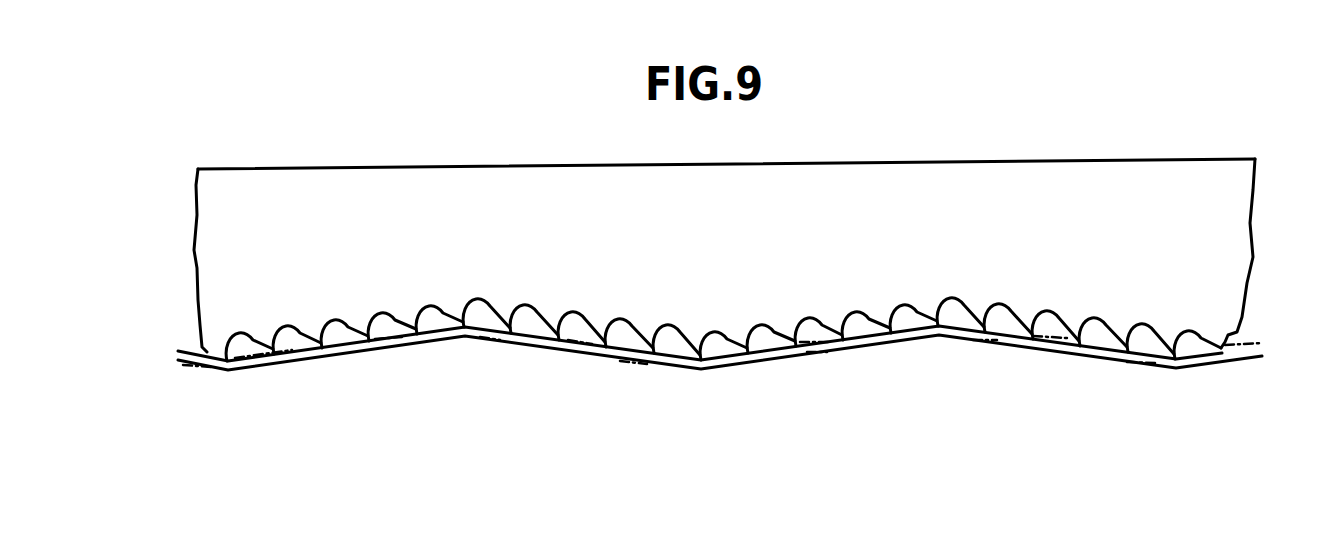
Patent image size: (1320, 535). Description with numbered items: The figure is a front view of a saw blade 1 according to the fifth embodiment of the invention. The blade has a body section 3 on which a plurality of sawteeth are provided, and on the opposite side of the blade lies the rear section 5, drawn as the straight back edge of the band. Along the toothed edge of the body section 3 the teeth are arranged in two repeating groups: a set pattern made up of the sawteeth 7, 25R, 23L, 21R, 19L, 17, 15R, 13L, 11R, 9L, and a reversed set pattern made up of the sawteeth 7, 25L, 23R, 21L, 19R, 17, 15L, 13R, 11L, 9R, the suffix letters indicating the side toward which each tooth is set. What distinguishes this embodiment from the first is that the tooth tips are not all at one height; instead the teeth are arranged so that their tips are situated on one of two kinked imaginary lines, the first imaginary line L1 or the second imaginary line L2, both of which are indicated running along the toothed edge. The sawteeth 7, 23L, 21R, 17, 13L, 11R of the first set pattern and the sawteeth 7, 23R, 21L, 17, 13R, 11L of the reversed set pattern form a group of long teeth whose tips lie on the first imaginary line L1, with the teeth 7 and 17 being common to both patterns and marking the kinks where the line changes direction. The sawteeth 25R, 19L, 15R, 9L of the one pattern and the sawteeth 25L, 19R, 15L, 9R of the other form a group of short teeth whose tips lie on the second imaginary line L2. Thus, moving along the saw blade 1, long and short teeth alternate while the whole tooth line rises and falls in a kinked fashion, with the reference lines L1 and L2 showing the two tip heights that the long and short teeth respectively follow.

The saw blade 1 is at (893, 190).
The body section 3 is at (698, 240).
The rear section 5 is at (1045, 160).
The sawtooth 7 is at (227, 364).
The sawtooth 9L is at (274, 357).
The sawtooth 9R is at (748, 356).
The sawtooth 11L is at (796, 349).
The sawtooth 11R is at (322, 351).
The sawtooth 13L is at (369, 344).
The sawtooth 13R is at (843, 343).
The sawtooth 15L is at (891, 336).
The sawtooth 15R is at (417, 337).
The sawtooth 17 is at (464, 330).
The sawtooth 19L is at (511, 336).
The sawtooth 19R is at (985, 335).
The sawtooth 21L is at (1033, 342).
The sawtooth 21R is at (559, 343).
The sawtooth 23L is at (606, 350).
The sawtooth 23R is at (1080, 349).
The sawtooth 25L is at (1128, 355).
The sawtooth 25R is at (654, 356).
The first imaginary line L1 is at (185, 366).
The second imaginary line L2 is at (190, 350).